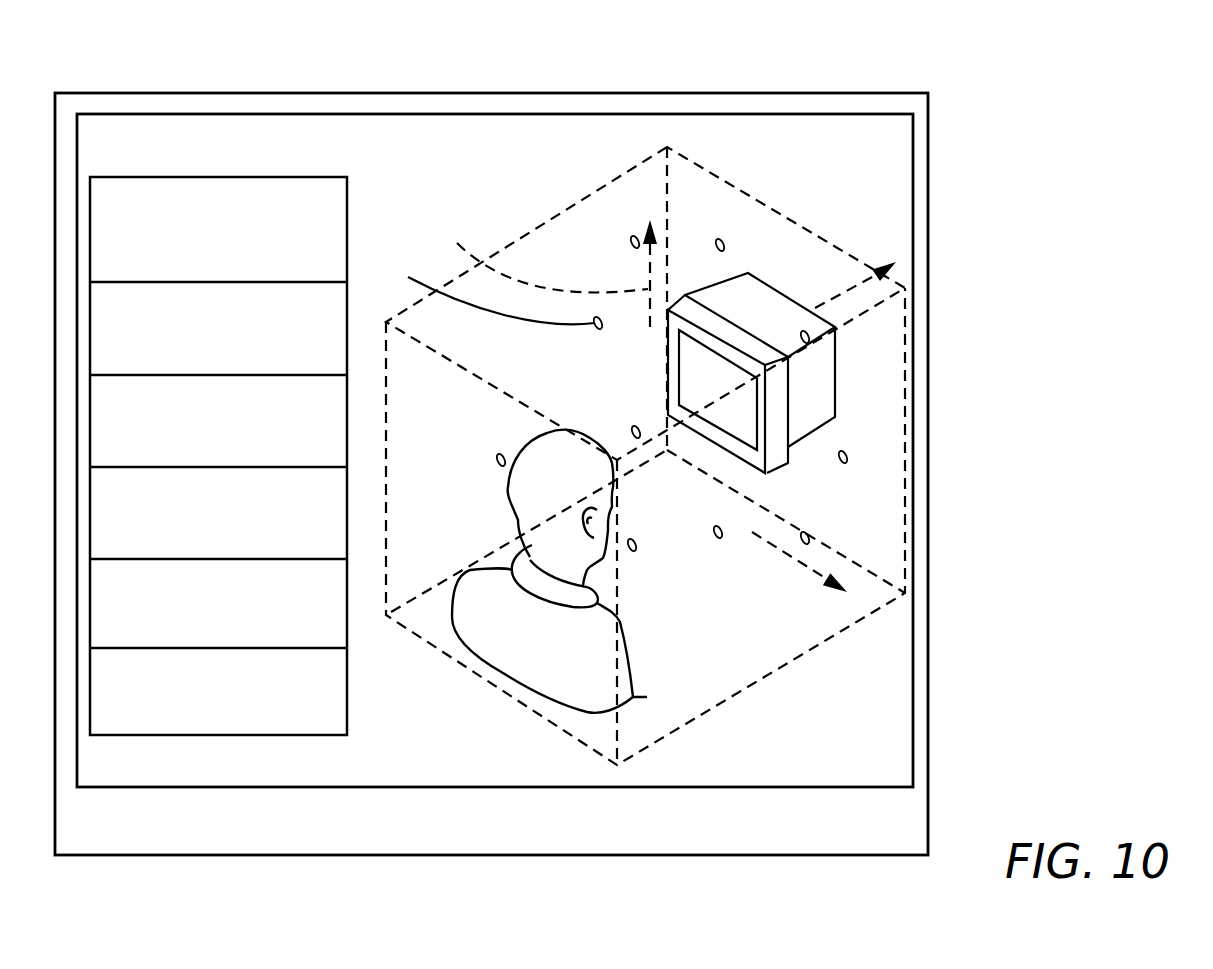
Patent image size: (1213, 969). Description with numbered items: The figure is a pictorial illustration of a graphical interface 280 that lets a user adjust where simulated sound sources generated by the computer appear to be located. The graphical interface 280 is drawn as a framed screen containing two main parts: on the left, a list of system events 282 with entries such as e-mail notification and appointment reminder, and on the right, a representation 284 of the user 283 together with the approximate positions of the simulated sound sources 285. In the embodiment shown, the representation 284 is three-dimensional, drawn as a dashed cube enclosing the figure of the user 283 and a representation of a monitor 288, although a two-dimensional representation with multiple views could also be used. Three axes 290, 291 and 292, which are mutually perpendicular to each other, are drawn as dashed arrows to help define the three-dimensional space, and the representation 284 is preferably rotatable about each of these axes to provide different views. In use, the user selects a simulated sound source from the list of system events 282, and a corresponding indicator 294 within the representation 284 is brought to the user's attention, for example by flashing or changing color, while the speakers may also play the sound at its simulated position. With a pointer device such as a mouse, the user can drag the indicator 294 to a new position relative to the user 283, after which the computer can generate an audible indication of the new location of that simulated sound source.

The graphical interface 280 is at (511, 59).
The list of system events 282 is at (217, 174).
The user 283 is at (647, 697).
The representation 284 is at (776, 134).
The simulated sound sources 285 is at (544, 241).
The monitor 288 is at (777, 290).
The axis 290 is at (858, 285).
The axis 291 is at (806, 563).
The axis 292 is at (537, 253).
The indicator 294 is at (486, 290).